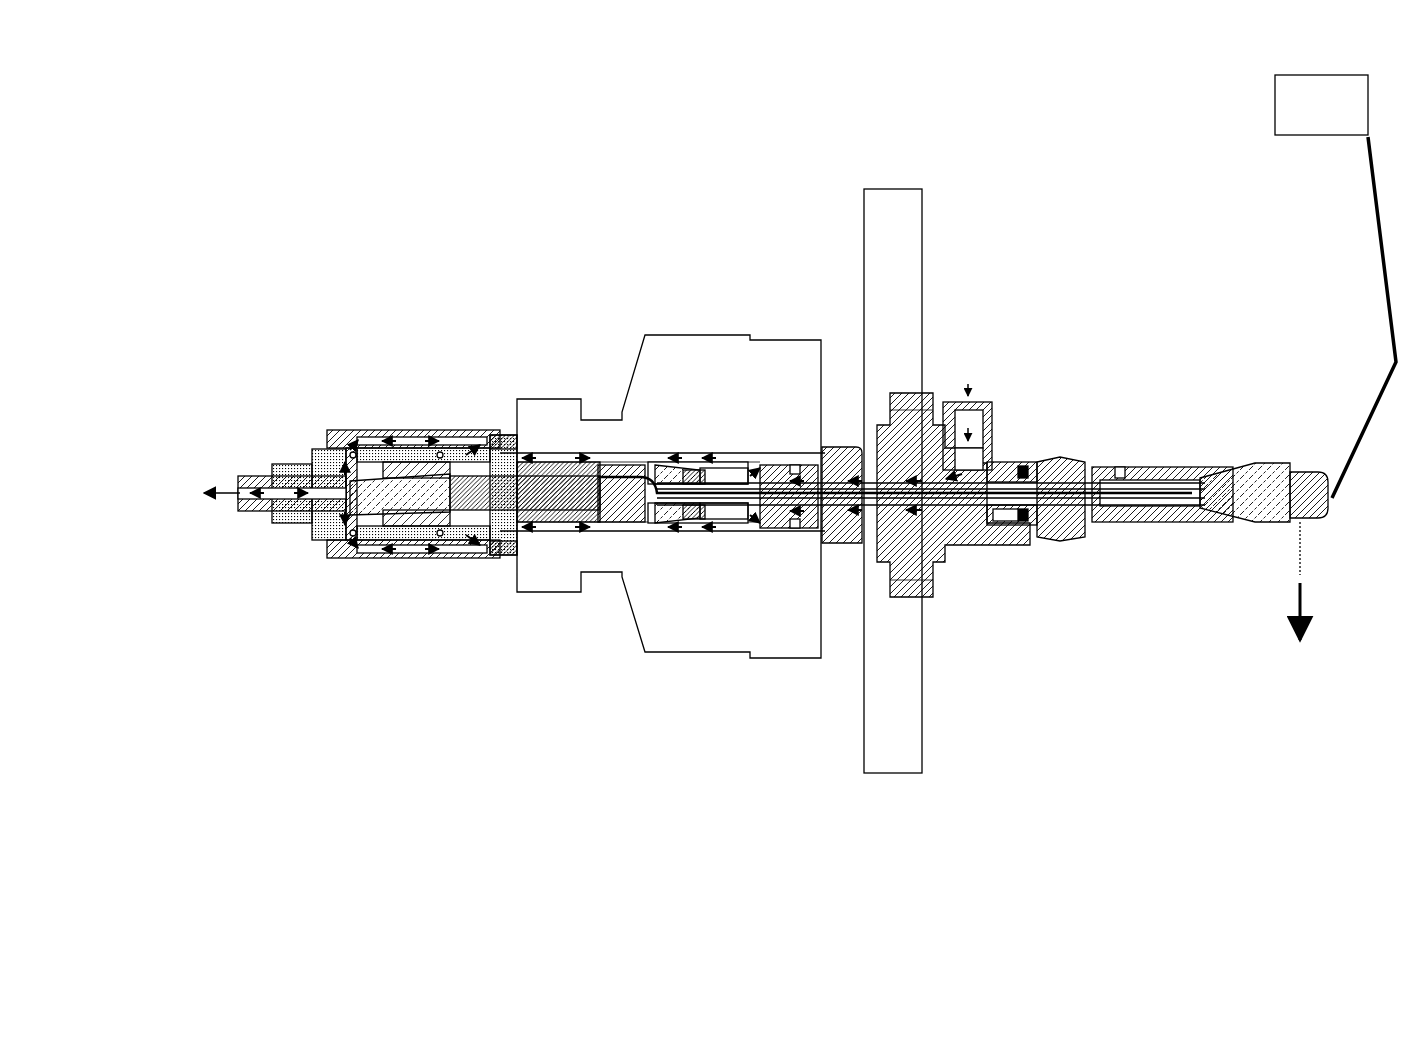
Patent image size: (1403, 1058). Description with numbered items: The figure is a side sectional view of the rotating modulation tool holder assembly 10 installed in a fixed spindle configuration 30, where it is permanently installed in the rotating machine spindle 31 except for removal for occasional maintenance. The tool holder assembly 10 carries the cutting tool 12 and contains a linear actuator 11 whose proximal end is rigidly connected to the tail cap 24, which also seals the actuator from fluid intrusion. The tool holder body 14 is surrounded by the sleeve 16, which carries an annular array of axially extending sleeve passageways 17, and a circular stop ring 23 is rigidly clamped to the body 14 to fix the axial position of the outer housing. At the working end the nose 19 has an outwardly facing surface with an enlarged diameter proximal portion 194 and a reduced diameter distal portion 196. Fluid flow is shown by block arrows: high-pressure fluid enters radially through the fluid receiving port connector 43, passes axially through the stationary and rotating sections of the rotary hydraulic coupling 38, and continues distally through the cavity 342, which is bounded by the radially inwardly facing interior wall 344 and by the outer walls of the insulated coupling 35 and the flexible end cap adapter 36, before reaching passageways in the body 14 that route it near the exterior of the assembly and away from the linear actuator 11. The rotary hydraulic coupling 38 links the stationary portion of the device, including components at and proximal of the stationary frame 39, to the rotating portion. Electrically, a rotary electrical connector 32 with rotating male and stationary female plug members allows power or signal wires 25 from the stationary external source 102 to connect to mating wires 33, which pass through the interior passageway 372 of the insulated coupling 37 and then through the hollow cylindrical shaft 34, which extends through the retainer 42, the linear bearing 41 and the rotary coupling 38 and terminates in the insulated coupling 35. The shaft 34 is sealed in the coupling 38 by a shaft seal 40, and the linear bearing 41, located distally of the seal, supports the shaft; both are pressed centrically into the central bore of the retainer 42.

The fixed spindle configuration 30 is at (356, 190).
The rotating modulation tool holder assembly 10 is at (302, 352).
The linear actuator 11 is at (470, 476).
The cutting tool 12 is at (238, 477).
The tool holder body 14 is at (484, 522).
The sleeve 16 is at (335, 426).
The sleeve passageways 17 is at (360, 432).
The nose 19 is at (244, 506).
The proximal portion surface 194 is at (312, 538).
The distal portion 196 is at (270, 470).
The circular stop ring 23 is at (506, 434).
The tail cap 24 is at (369, 499).
The power and/or signal wires 25 is at (1375, 180).
The rotating machine spindle 31 is at (560, 410).
The rotary electrical connector 32 is at (1281, 463).
The mating wires 33 is at (1185, 498).
The hollow cylindrical shaft 34 is at (744, 460).
The insulated coupling 35 is at (716, 523).
The flexible end cap adapter 36 is at (656, 525).
The insulated coupling 37 is at (1159, 449).
The interior passageway 372 is at (1168, 504).
The rotary hydraulic coupling 38 is at (918, 407).
The stationary frame 39 is at (904, 712).
The shaft seal 40 is at (1033, 514).
The linear bearing 41 is at (994, 526).
The retainer 42 is at (1070, 540).
The fluid receiving port connector 43 is at (980, 450).
The external power and/or control source 102 is at (1270, 84).
The passageway cavity 342 is at (730, 527).
The radially inwardly facing interior wall 344 is at (690, 453).